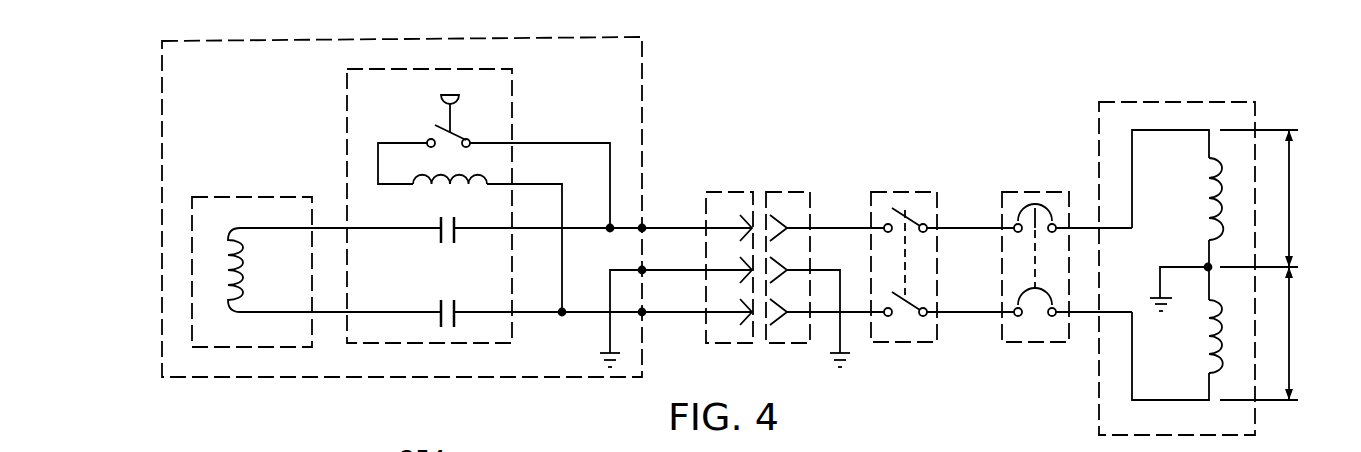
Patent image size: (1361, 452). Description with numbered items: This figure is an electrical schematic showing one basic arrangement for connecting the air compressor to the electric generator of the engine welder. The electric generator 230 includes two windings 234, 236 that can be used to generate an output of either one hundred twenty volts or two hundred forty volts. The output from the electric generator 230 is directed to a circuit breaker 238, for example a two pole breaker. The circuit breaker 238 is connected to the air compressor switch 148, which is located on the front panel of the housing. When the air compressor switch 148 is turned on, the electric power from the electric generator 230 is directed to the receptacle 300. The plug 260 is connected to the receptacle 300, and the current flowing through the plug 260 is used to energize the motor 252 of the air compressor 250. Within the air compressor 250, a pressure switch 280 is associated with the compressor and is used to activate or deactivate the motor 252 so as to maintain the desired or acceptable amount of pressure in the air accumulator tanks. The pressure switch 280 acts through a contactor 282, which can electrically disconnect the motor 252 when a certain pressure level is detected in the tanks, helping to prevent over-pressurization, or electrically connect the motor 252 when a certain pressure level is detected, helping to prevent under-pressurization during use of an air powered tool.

The air compressor 250 is at (650, 61).
The motor 252 is at (191, 240).
The contactor 282 is at (338, 87).
The pressure switch 280 is at (465, 106).
The plug 260 is at (726, 186).
The receptacle 300 is at (797, 186).
The air compressor switch 148 is at (914, 186).
The circuit breaker 238 is at (1026, 186).
The electric generator 230 is at (1216, 238).
The winding 234 is at (1207, 207).
The winding 236 is at (1205, 322).